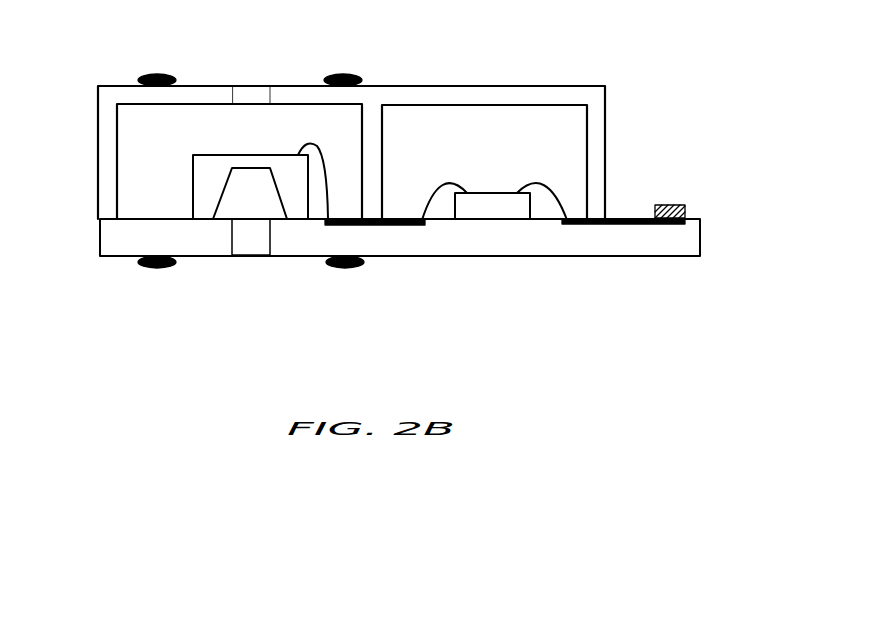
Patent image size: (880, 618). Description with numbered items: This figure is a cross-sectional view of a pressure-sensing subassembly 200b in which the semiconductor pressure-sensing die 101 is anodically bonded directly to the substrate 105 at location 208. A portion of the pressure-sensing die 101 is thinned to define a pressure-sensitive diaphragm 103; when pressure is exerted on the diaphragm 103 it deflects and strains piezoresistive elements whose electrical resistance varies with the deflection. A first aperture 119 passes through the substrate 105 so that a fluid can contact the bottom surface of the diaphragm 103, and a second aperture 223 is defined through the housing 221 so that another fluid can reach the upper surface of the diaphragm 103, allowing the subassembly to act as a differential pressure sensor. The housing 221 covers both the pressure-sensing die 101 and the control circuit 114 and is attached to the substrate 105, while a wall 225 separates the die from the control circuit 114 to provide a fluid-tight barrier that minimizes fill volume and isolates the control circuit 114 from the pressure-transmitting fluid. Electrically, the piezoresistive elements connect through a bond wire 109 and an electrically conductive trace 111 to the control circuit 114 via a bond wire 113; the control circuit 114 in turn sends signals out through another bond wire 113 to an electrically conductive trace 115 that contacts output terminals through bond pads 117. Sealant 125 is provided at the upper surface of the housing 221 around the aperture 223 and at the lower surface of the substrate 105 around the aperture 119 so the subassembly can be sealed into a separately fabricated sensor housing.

The pressure-sensing subassembly 200b is at (650, 70).
The substrate 105 is at (688, 238).
The housing 221 is at (428, 92).
The second aperture 223 is at (252, 95).
The wall 225 is at (380, 142).
The sealant 125 is at (150, 73).
The semiconductor pressure-sensing die 101 is at (205, 176).
The pressure-sensitive diaphragm 103 is at (250, 165).
The bond wire 109 is at (326, 156).
The electrically conductive trace 111 is at (347, 218).
The bond wire 113 is at (420, 197).
The control circuit 114 is at (500, 193).
The electrically conductive trace 115 is at (610, 217).
The bond pads 117 is at (676, 205).
The first aperture 119 is at (257, 243).
The location 208 is at (190, 216).